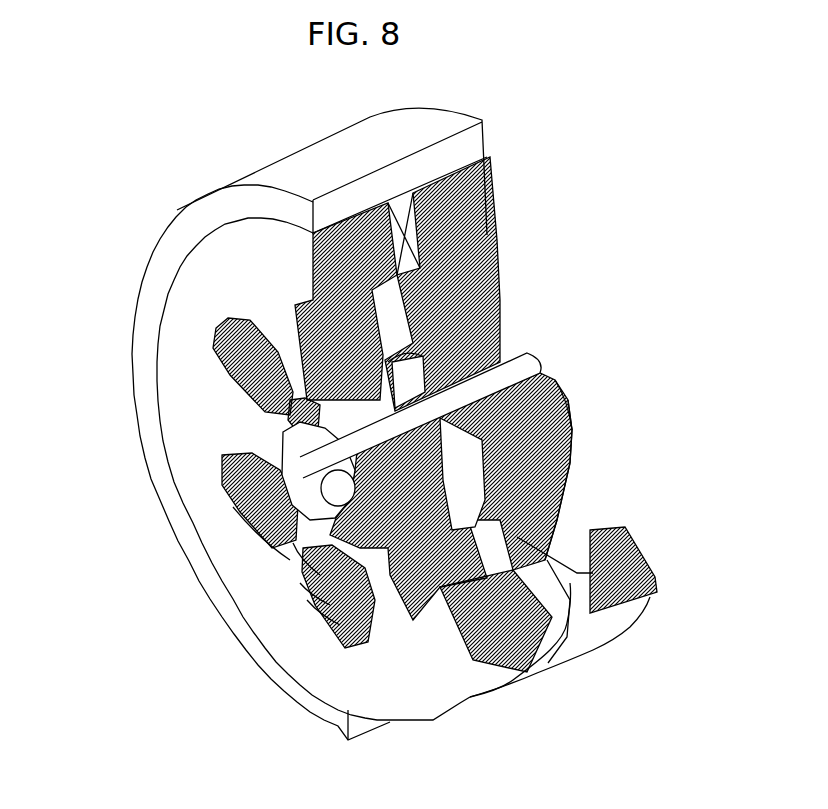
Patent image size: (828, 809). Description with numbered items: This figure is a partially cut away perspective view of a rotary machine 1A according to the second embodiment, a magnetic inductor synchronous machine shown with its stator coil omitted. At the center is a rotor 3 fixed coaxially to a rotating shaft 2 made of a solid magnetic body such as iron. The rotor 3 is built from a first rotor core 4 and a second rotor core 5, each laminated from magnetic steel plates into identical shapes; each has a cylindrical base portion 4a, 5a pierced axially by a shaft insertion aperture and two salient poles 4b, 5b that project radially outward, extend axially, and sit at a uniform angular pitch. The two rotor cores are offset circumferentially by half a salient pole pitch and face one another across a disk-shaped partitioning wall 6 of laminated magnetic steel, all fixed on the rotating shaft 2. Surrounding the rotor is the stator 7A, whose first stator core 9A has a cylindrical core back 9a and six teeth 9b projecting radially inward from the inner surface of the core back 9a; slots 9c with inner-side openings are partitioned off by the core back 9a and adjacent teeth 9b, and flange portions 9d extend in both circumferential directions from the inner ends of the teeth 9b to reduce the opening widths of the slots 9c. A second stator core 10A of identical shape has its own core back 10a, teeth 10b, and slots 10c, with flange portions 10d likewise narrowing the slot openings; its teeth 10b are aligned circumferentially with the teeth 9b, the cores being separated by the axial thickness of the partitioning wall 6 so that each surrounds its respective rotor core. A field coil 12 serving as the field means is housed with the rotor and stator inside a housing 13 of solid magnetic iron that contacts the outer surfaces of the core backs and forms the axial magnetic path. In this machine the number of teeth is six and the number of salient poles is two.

The rotary machine 1A is at (141, 100).
The housing 13 is at (178, 214).
The first stator core 9A is at (190, 300).
The core back 9a is at (293, 543).
The teeth 9b is at (300, 583).
The slots 9c is at (233, 507).
The flange portions 9d is at (307, 600).
The stator 7A is at (492, 248).
The second stator core 10A is at (490, 190).
The partitioning wall 6 is at (487, 337).
The first rotor core 4 is at (78, 398).
The base portion 4a is at (303, 403).
The salient poles 4b is at (285, 442).
The rotating shaft 2 is at (558, 380).
The rotor 3 is at (545, 347).
The second rotor core 5 is at (605, 390).
The base portion 5a is at (540, 412).
The salient poles 5b is at (543, 440).
The core back 10a is at (623, 530).
The teeth 10b is at (573, 493).
The slots 10c is at (590, 522).
The flange portions 10d is at (547, 463).
The field coil 12 is at (570, 623).